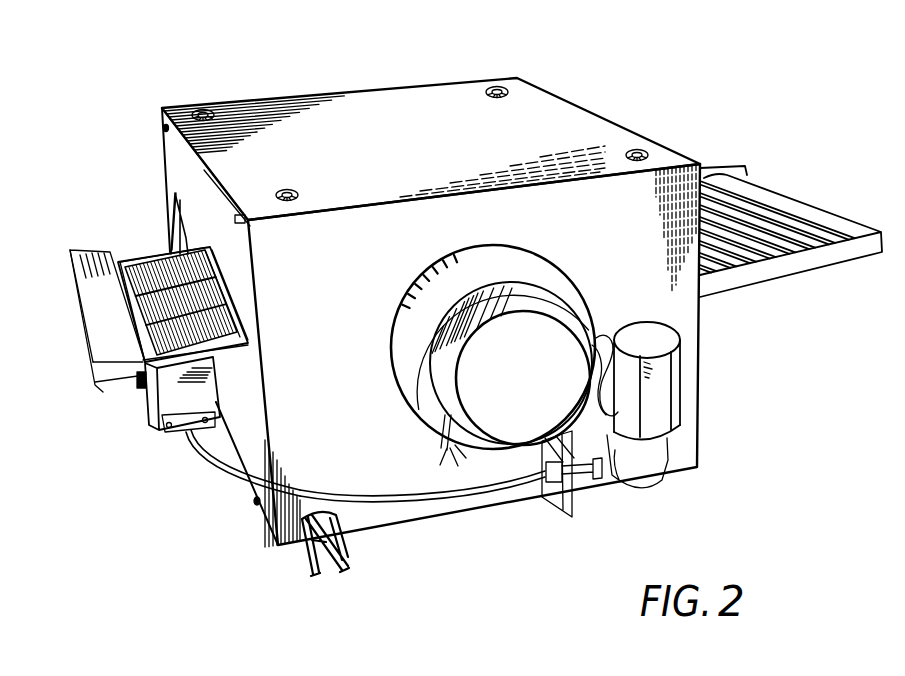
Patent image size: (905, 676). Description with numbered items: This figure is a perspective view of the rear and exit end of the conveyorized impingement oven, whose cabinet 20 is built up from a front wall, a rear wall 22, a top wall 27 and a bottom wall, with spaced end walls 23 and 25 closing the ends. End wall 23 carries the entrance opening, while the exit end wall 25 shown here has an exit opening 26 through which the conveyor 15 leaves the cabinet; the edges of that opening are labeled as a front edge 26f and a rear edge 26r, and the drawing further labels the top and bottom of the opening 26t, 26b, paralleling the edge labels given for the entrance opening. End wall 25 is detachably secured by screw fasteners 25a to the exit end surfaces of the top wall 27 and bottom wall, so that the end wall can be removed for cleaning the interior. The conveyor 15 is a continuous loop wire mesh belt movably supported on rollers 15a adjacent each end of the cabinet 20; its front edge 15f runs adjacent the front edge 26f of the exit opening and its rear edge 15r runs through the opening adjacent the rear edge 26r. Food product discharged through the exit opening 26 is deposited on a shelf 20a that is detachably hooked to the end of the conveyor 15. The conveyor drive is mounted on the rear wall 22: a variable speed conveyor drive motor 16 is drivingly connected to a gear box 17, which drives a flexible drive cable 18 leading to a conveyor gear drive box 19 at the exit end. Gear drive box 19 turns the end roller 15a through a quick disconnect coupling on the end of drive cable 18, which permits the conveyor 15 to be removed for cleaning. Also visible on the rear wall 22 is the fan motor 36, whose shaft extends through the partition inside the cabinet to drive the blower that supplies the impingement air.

The cabinet 20 is at (395, 86).
The top wall 27 is at (533, 108).
The end wall 25 is at (178, 163).
The screw fasteners 25a is at (162, 125).
The exit opening 26 is at (170, 228).
The frame top flange 26t is at (182, 228).
The front edge of exit opening 26f is at (175, 195).
The rear edge of exit opening 26r is at (237, 316).
The frame bottom flange 26b is at (240, 386).
The conveyor 15 is at (178, 253).
The rollers 15a is at (140, 306).
The front edge of conveyor 15f is at (193, 247).
The rear edge of conveyor 15r is at (233, 349).
The shelf 20a is at (113, 335).
The conveyor gear drive box 19 is at (173, 389).
The flexible drive cable 18 is at (215, 463).
The rear wall 22 is at (410, 478).
The fan motor 36 is at (535, 303).
The conveyor drive motor 16 is at (665, 393).
The gear box 17 is at (625, 480).
The end wall 23 is at (700, 317).